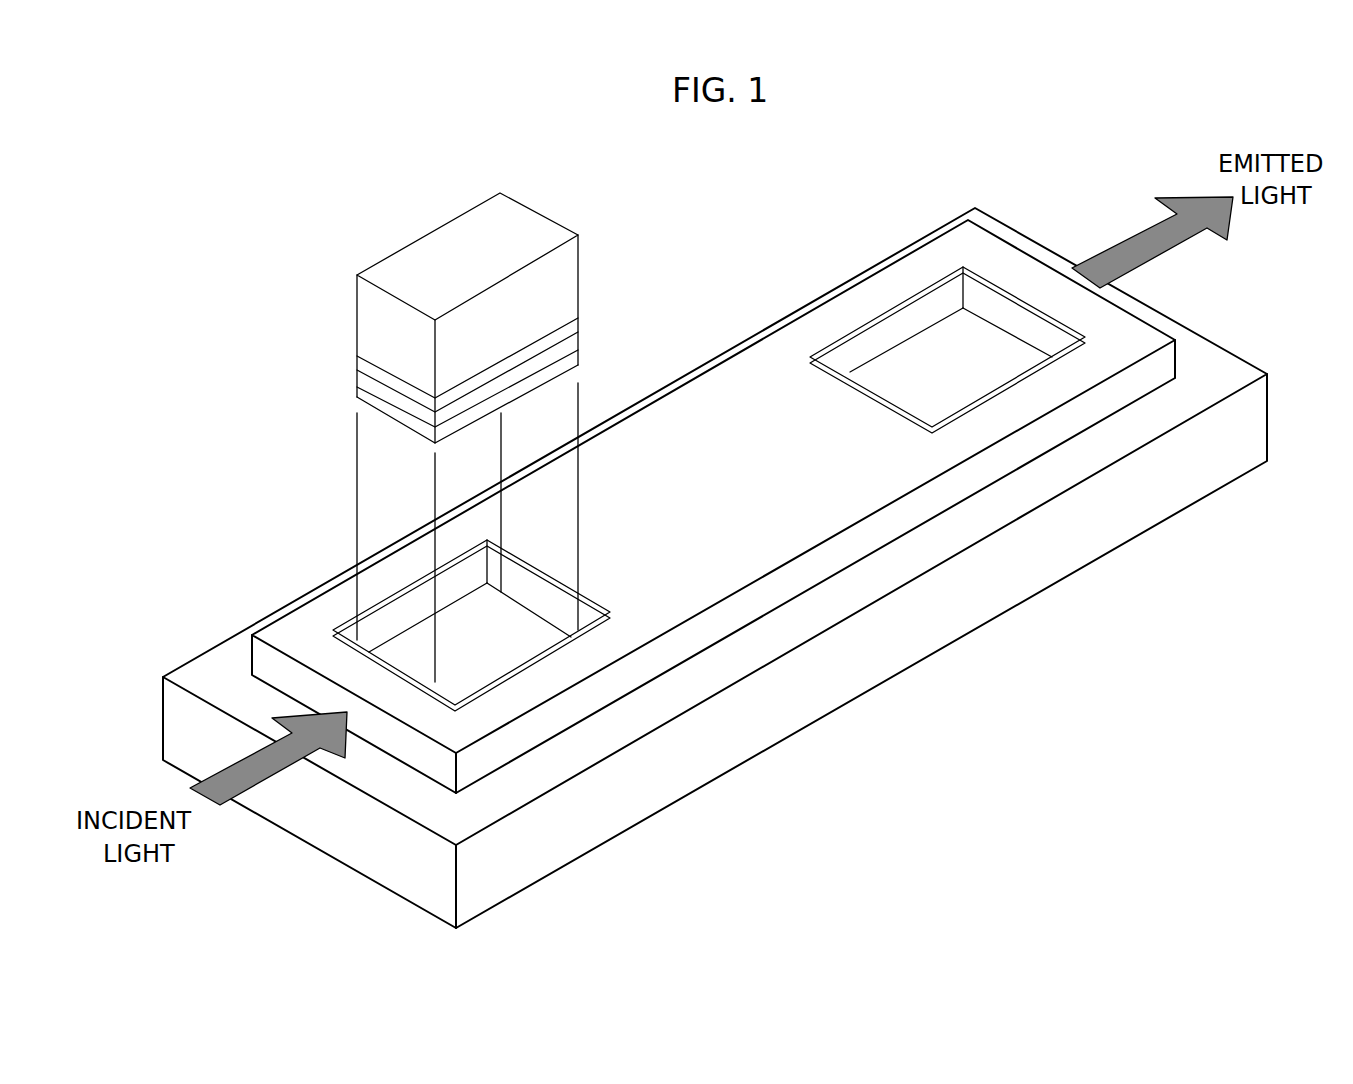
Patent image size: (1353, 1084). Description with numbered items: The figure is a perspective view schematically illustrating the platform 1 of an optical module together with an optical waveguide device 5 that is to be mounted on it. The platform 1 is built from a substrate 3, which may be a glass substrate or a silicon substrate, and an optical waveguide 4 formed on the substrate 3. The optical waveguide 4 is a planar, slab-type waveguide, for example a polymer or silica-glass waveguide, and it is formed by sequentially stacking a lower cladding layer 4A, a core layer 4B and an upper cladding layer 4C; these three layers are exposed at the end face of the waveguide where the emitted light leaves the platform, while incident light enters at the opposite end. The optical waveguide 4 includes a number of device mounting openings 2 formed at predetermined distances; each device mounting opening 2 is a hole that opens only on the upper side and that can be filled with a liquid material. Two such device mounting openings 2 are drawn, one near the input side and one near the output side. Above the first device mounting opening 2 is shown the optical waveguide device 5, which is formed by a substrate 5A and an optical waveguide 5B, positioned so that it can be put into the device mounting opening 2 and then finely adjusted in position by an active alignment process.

The platform 1 is at (770, 772).
The device mounting opening 2 is at (493, 645).
The substrate 3 is at (790, 712).
The optical waveguide 4 is at (882, 542).
The lower cladding layer 4A is at (1168, 378).
The core layer 4B is at (1167, 362).
The upper cladding layer 4C is at (1168, 348).
The optical waveguide device 5 is at (437, 421).
The substrate 5A is at (368, 315).
The optical waveguide 5B is at (360, 397).